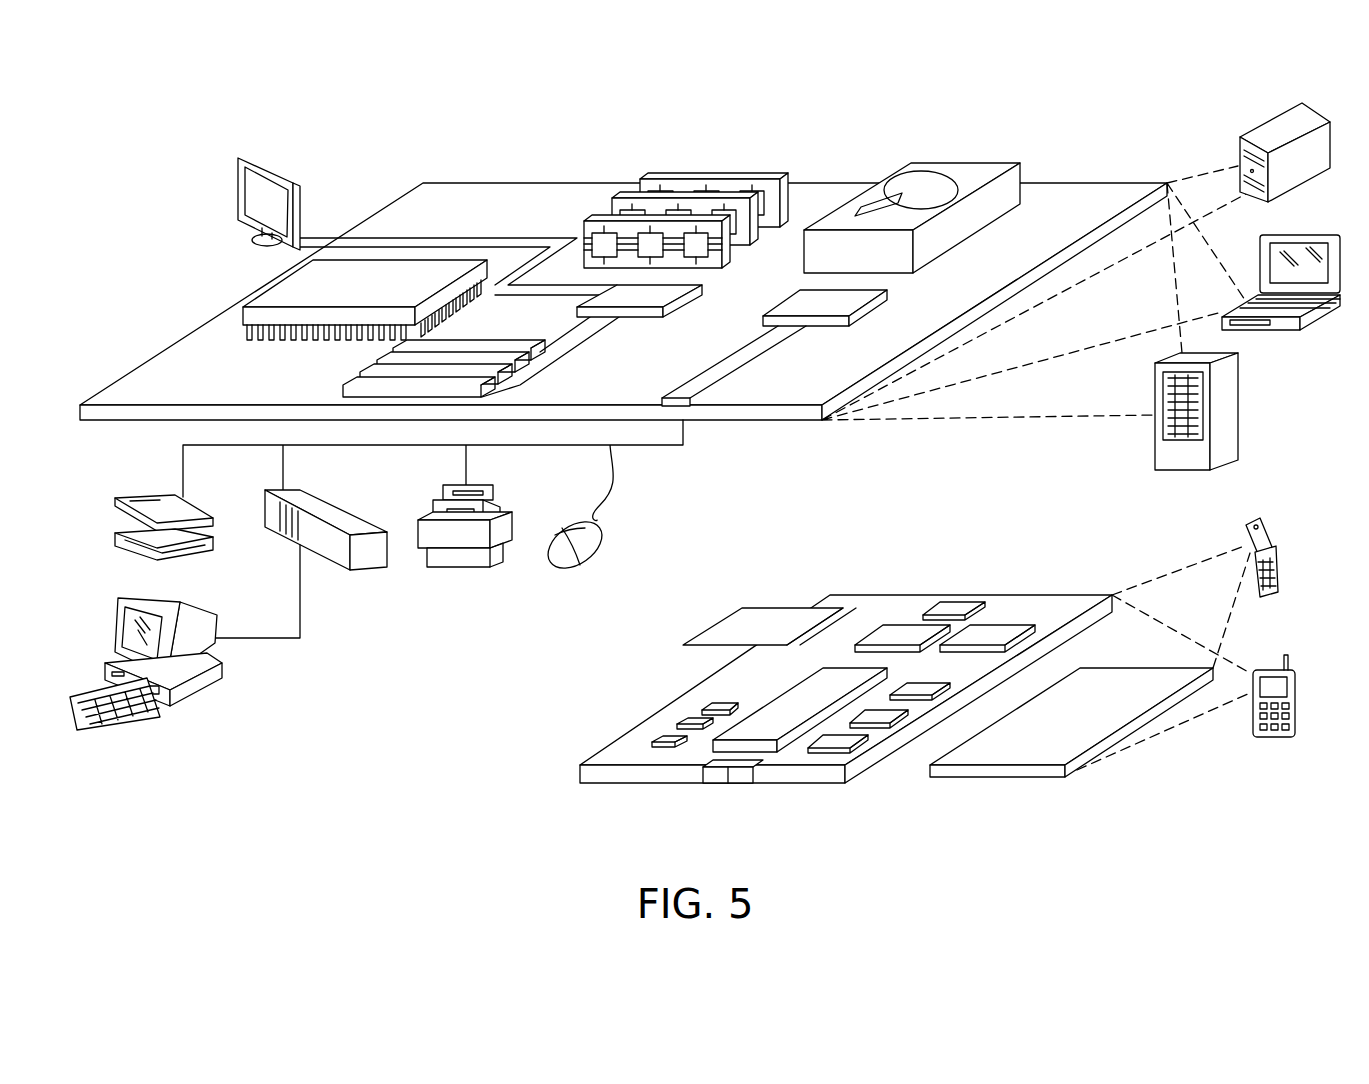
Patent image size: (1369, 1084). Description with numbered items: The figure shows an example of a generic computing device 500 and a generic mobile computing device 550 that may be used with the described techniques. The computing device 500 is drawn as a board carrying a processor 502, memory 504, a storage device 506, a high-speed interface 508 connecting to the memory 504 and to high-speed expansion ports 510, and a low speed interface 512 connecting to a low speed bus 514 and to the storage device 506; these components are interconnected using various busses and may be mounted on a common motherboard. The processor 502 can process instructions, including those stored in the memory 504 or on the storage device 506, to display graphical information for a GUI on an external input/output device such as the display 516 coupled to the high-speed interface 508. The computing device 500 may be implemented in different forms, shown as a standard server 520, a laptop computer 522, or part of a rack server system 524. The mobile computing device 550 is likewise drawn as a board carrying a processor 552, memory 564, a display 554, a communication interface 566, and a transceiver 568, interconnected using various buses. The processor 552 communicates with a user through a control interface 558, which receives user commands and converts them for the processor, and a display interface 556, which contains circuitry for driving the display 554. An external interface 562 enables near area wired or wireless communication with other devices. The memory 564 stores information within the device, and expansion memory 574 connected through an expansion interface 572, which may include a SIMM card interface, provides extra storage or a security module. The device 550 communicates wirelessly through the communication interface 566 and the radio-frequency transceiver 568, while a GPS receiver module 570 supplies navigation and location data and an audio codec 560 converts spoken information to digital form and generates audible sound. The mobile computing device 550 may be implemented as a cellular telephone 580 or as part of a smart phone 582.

The computing device 500 is at (366, 125).
The processor 502 is at (272, 294).
The memory 504 is at (722, 180).
The storage device 506 is at (953, 162).
The high-speed interface 508 is at (656, 300).
The high-speed expansion ports 510 is at (370, 372).
The low speed interface 512 is at (800, 302).
The low speed bus 514 is at (683, 396).
The display 516 is at (252, 156).
The standard server 520 is at (1262, 130).
The laptop computer 522 is at (1312, 233).
The rack server system 524 is at (1240, 408).
The mobile computer device 550 is at (527, 800).
The processor 552 is at (771, 733).
The display 554 is at (1108, 683).
The display interface 556 is at (848, 740).
The control interface 558 is at (888, 714).
The audio codec 560 is at (922, 685).
The external interface 562 is at (731, 780).
The memory 564 is at (684, 720).
The communication interface 566 is at (903, 626).
The transceiver 568 is at (994, 627).
The GPS receiver module 570 is at (953, 604).
The expansion interface 572 is at (827, 606).
The expansion memory 574 is at (743, 606).
The cellular telephone 580 is at (1257, 521).
The smart phone 582 is at (1263, 668).